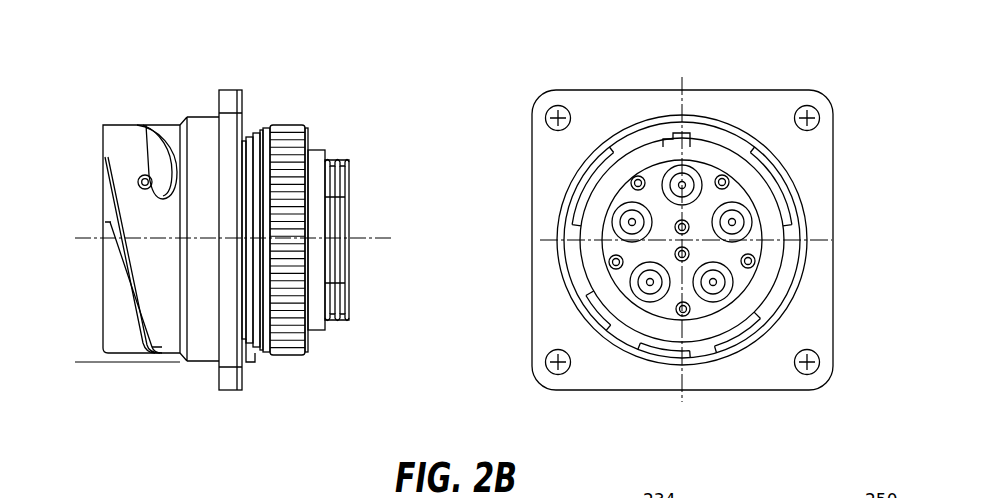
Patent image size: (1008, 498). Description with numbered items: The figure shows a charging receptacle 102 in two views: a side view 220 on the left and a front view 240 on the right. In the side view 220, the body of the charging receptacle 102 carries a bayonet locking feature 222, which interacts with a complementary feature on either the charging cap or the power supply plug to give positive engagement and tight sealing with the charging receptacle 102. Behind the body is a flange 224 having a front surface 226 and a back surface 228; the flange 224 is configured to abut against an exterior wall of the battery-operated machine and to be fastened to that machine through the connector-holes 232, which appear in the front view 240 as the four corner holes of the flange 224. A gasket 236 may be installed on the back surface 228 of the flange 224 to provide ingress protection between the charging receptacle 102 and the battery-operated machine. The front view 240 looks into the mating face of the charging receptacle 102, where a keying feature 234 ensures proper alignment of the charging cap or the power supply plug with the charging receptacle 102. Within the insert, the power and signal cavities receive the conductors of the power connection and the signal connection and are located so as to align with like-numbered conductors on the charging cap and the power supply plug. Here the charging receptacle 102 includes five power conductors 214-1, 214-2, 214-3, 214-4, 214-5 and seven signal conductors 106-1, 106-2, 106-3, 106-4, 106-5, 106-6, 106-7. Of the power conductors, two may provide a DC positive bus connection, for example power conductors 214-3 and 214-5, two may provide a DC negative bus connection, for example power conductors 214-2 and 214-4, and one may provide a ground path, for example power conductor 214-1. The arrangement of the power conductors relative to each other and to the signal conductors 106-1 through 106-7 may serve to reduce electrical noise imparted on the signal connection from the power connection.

The side view 220 is at (90, 75).
The bayonet locking feature 222 is at (107, 208).
The flange 224 is at (232, 88).
The front surface 226 is at (218, 109).
The back surface 228 is at (248, 101).
The charging receptacle 102 is at (203, 363).
The connector-holes 232 is at (250, 368).
The gasket 236 is at (247, 361).
The receptacle connector face 240 is at (842, 110).
The keying feature 234 is at (690, 137).
The power conductor 214-1 is at (664, 181).
The power conductor 214-2 is at (752, 221).
The power conductor 214-3 is at (612, 220).
The power conductor 214-4 is at (631, 287).
The power conductor 214-5 is at (715, 303).
The signal conductor 106-1 is at (631, 181).
The signal conductor 106-2 is at (729, 181).
The signal conductor 106-3 is at (688, 224).
The signal conductor 106-4 is at (609, 262).
The signal conductor 106-5 is at (755, 260).
The signal conductor 106-6 is at (677, 259).
The signal conductor 106-7 is at (680, 315).